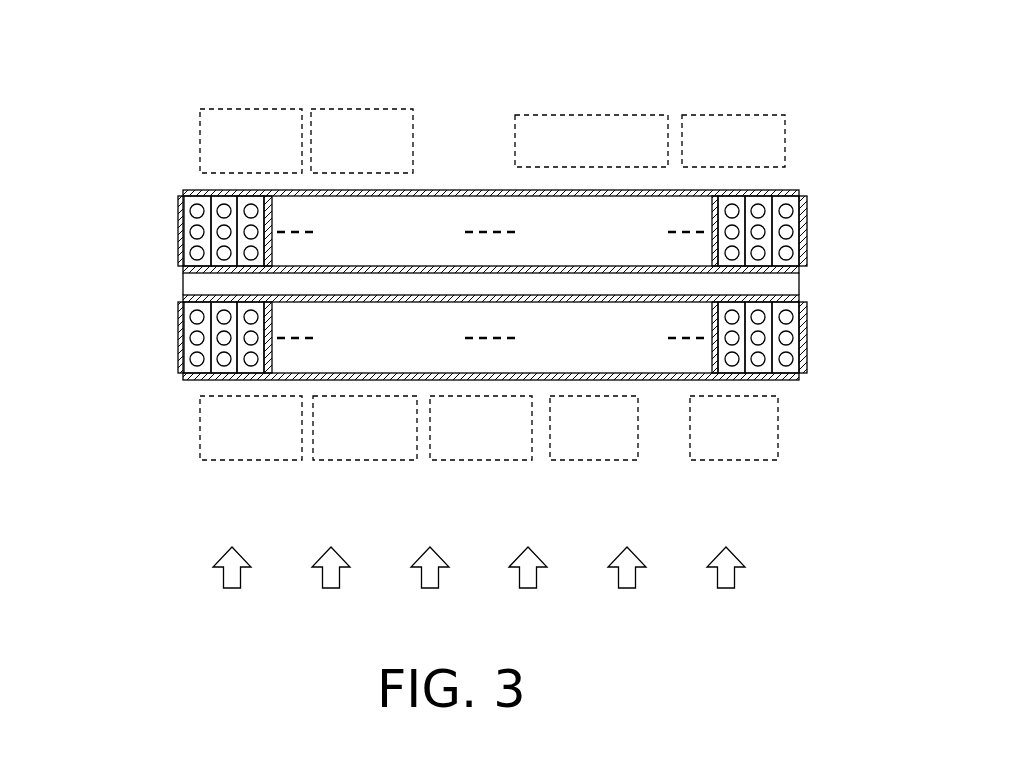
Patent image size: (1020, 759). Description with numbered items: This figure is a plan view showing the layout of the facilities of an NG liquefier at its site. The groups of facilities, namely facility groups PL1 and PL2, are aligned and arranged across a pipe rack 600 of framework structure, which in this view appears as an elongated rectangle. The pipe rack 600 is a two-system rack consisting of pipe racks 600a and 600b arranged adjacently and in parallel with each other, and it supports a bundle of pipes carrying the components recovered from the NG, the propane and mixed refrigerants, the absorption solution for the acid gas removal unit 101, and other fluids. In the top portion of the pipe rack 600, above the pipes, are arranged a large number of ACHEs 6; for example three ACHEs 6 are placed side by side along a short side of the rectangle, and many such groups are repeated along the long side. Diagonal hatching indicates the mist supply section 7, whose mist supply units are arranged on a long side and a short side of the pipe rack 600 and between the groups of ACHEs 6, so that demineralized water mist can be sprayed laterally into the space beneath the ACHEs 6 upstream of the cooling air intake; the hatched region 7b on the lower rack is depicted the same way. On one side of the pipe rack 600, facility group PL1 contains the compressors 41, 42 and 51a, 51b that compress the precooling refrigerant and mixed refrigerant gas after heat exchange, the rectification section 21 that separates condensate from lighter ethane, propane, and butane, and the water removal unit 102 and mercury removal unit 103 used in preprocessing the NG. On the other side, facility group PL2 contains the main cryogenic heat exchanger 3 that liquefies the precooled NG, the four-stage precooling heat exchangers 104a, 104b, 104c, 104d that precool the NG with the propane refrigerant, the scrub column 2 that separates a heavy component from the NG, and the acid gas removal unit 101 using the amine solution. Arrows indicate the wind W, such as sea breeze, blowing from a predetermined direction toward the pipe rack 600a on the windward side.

The pipe rack 600 is at (457, 212).
The pipe rack 600a is at (472, 419).
The pipe rack 600b is at (472, 173).
The mist supply section 7 is at (200, 190).
The shield member (lower connector) 7b is at (200, 382).
The ACHE 6 is at (192, 258).
The facility group PL1 is at (192, 142).
The facility group PL2 is at (190, 432).
The compressor 41 is at (250, 109).
The compressor 42 is at (251, 116).
The compressor 51a is at (373, 88).
The compressor 51b is at (372, 116).
The rectification section 21 is at (590, 114).
The water removal unit 102 is at (743, 93).
The mercury removal unit 103 is at (745, 116).
The main cryogenic heat exchanger 3 is at (255, 462).
The precooling heat exchanger 104a is at (370, 462).
The precooling heat exchanger 104b is at (593, 462).
The precooling heat exchanger 104c is at (600, 452).
The precooling heat exchanger 104d is at (370, 452).
The scrub column 2 is at (470, 462).
The acid gas removal unit 101 is at (740, 462).
The wind W is at (627, 588).